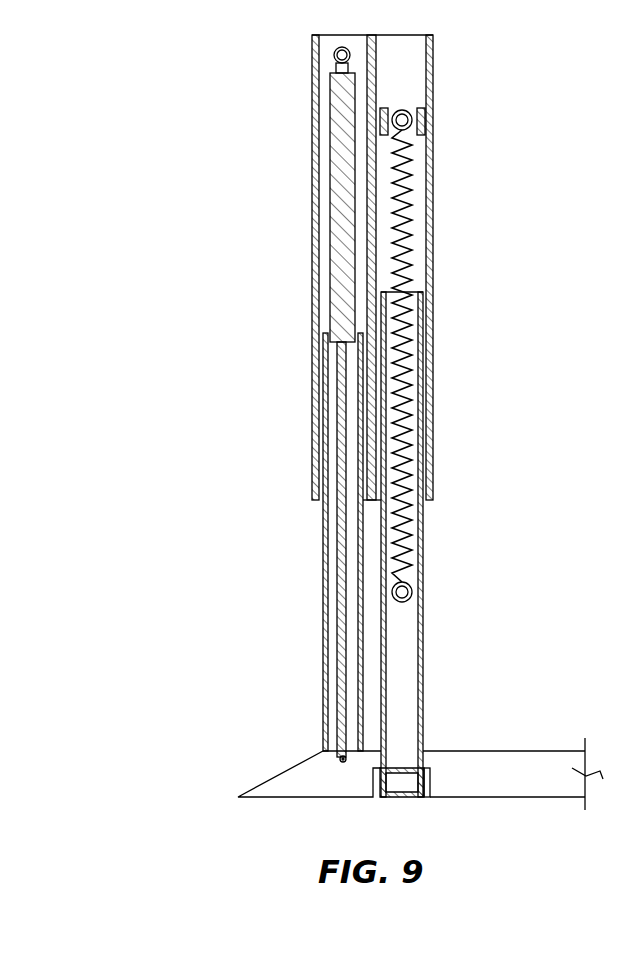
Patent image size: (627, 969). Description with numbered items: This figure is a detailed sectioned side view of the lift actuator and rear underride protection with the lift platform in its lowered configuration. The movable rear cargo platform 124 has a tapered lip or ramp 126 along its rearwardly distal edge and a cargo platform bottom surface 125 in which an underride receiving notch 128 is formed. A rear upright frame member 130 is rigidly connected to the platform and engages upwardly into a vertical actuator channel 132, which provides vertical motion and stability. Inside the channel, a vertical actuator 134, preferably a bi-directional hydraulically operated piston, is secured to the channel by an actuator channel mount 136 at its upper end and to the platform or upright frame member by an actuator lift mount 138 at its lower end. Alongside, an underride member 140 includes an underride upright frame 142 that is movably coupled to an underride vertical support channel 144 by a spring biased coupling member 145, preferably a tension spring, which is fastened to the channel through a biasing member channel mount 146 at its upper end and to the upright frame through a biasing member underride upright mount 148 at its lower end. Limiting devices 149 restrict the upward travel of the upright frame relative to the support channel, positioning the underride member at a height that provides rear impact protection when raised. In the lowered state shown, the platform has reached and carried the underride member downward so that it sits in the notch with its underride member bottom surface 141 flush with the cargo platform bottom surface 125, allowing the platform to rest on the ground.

The movable rear cargo platform 124 is at (540, 751).
The cargo platform bottom surface 125 is at (545, 800).
The tapered lip or ramp 126 is at (281, 773).
The underride receiving notch 128 is at (370, 779).
The rear upright frame member 130 is at (323, 548).
The vertical actuator channel 132 is at (312, 300).
The vertical actuator 134 is at (340, 177).
The actuator channel mount 136 is at (336, 68).
The actuator lift mount 138 is at (340, 758).
The underride member 140 is at (430, 780).
The underride member bottom surface 141 is at (404, 802).
The underride upright frame 142 is at (423, 660).
The underride vertical support channel 144 is at (433, 412).
The spring biased coupling member 145 is at (405, 256).
The biasing member channel mount 146 is at (410, 121).
The biasing member underride upright mount 148 is at (410, 596).
The limiting device 149 is at (424, 112).